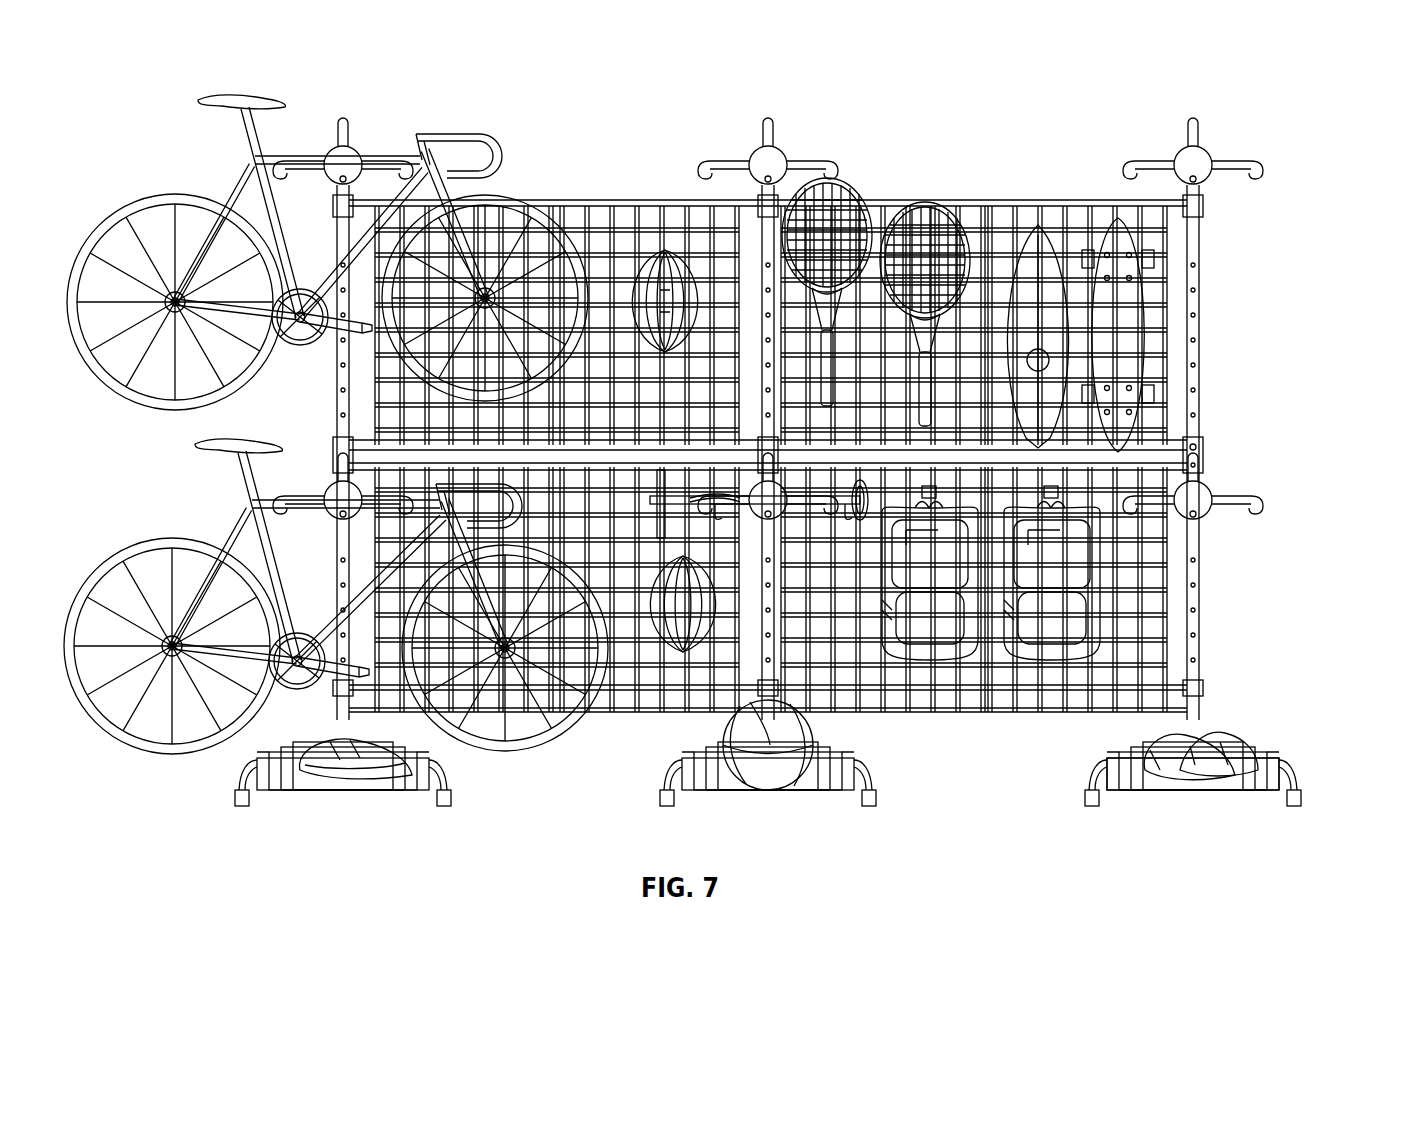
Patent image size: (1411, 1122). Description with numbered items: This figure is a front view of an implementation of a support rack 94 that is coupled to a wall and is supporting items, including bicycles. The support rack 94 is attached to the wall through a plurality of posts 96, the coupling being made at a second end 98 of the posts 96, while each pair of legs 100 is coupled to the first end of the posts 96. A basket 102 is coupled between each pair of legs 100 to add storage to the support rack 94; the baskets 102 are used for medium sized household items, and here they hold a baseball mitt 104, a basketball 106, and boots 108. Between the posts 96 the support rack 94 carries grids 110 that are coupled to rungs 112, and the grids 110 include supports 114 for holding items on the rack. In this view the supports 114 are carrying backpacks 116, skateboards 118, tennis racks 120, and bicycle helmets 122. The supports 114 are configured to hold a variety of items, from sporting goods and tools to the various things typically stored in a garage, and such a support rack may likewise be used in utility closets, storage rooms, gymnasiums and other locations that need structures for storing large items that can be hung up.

The support rack 94 is at (1280, 69).
The posts 96 is at (1197, 290).
The second end 98 is at (1200, 128).
The legs 100 is at (1303, 785).
The basket 102 is at (1190, 790).
The baseball mitt 104 is at (310, 776).
The basketball 106 is at (825, 735).
The boots 108 is at (1208, 722).
The grids 110 is at (1162, 368).
The rungs 112 is at (1030, 215).
The supports 114 is at (1205, 455).
The backpacks 116 is at (1078, 572).
The skateboards 118 is at (1132, 296).
The tennis racks 120 is at (842, 196).
The bicycle helmets 122 is at (662, 250).